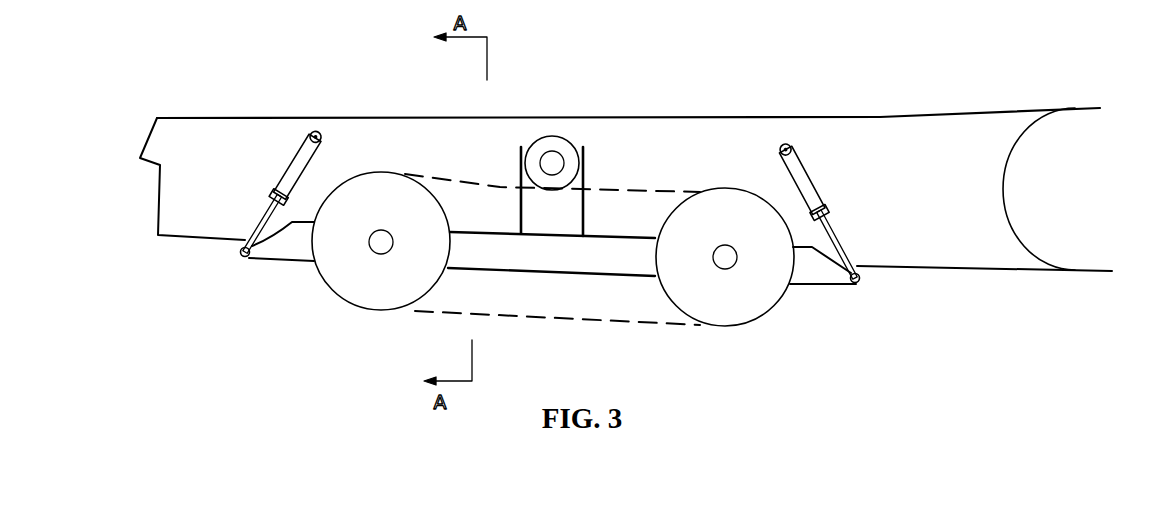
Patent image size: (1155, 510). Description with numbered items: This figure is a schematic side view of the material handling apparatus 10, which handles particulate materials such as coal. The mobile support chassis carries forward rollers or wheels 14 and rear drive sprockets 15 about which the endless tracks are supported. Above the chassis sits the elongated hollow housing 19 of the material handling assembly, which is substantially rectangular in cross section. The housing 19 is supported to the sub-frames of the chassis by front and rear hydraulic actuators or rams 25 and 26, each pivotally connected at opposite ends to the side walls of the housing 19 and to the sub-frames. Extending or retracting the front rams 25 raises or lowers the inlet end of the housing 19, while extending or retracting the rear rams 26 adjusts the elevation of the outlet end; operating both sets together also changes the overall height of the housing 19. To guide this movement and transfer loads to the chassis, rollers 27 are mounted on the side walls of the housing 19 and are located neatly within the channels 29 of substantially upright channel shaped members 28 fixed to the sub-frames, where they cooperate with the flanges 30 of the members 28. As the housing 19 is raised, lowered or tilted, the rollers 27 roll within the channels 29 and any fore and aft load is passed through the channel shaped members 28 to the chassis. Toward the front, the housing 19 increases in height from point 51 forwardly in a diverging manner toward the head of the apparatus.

The material handling apparatus 10 is at (850, 70).
The forward rollers or wheels 14 is at (742, 315).
The rear drive sprockets 15 is at (357, 298).
The elongated hollow housing 19 is at (360, 110).
The front hydraulic actuators or rams 25 is at (800, 172).
The rear hydraulic actuators or rams 26 is at (312, 138).
The rollers 27 is at (551, 139).
The channel shaped members 28 is at (600, 129).
The channels 29 is at (545, 218).
The flanges 30 is at (519, 162).
The point 51 is at (882, 115).